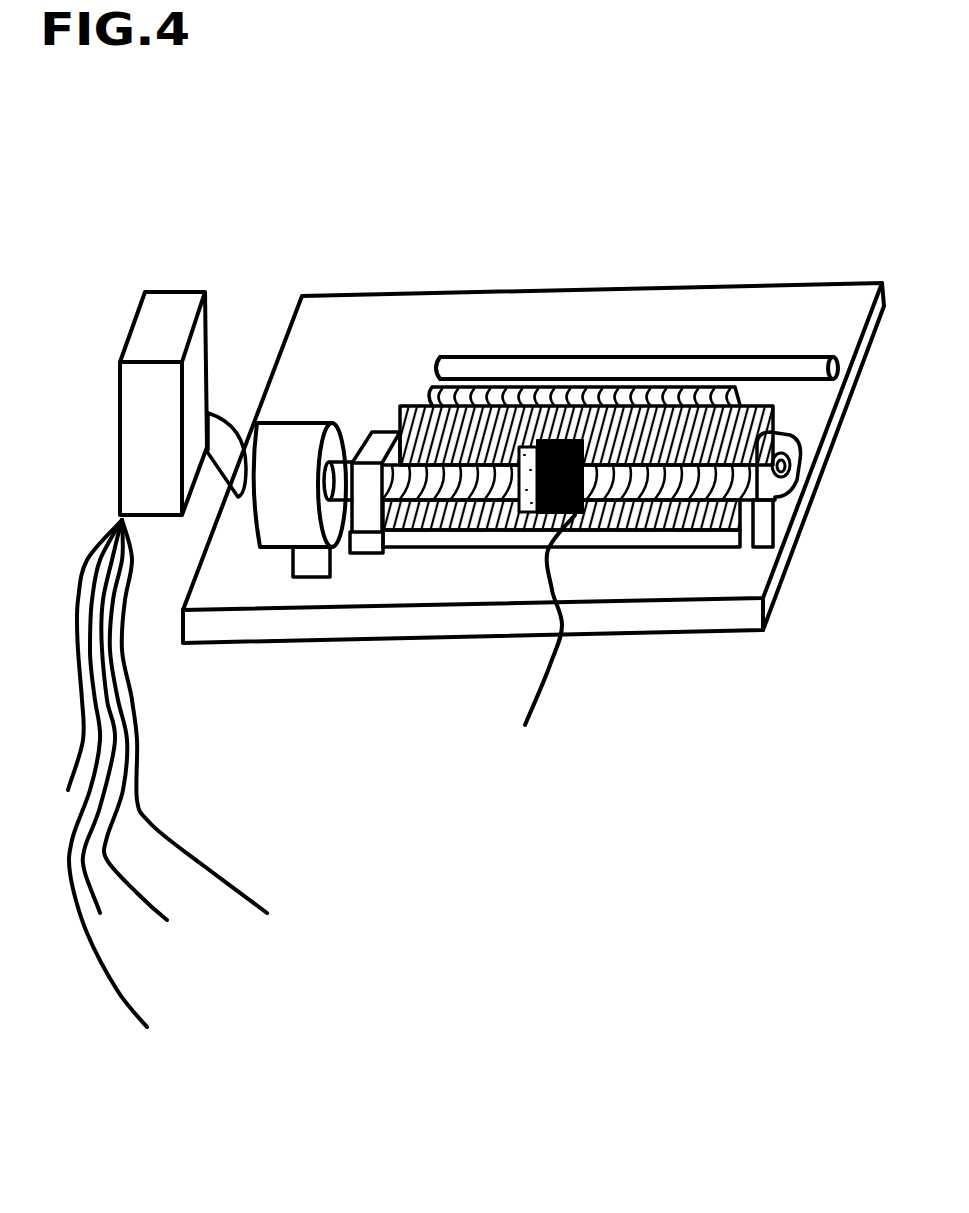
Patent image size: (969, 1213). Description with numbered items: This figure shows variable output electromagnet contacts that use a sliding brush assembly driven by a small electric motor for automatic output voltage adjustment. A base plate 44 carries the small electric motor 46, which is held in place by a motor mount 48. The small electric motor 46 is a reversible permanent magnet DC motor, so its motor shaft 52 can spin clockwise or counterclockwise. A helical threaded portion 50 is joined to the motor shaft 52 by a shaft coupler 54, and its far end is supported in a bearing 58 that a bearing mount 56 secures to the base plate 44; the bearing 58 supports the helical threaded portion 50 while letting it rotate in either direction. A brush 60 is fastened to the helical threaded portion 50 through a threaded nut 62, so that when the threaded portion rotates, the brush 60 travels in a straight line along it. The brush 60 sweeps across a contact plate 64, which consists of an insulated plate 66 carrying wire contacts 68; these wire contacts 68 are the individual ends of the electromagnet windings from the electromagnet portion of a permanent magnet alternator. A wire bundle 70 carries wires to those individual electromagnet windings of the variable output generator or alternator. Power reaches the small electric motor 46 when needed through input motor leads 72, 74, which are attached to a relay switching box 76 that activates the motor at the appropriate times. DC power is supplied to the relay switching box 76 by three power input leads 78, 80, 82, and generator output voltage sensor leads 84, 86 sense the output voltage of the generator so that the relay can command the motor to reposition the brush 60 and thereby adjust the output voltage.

The base plate 44 is at (682, 318).
The small electric motor 46 is at (293, 512).
The motor mount 48 is at (310, 547).
The helical threaded portion 50 is at (640, 478).
The motor shaft 52 is at (345, 462).
The shaft coupler 54 is at (367, 510).
The bearing mount 56 is at (787, 530).
The bearing 58 is at (782, 468).
The brush 60 is at (600, 527).
The threaded nut 62 is at (522, 478).
The contact plate 64 is at (388, 400).
The insulated plate 66 is at (712, 533).
The wire contacts 68 is at (413, 390).
The wire bundle 70 is at (822, 350).
The input motor lead 72 is at (217, 445).
The input motor lead 74 is at (238, 447).
The relay switching box 76 is at (121, 440).
The power input lead 78 is at (93, 890).
The power input lead 80 is at (160, 910).
The power input lead 82 is at (200, 868).
The generator output voltage sensor lead 84 is at (100, 543).
The generator output voltage sensor lead 86 is at (122, 993).